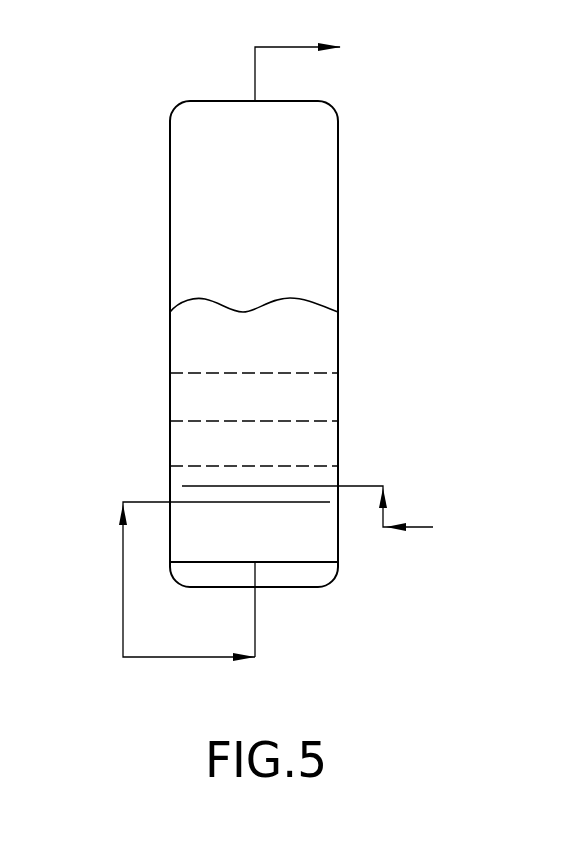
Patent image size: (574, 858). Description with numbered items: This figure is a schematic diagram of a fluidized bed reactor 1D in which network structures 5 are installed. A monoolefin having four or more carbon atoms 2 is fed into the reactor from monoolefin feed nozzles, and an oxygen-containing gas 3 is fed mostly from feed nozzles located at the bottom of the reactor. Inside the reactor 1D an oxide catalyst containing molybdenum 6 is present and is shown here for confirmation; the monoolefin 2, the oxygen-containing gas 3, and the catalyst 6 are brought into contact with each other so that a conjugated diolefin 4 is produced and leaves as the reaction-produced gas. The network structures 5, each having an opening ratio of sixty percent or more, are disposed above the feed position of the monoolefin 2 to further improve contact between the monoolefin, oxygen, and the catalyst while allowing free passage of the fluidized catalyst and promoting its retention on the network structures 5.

The fluidized bed reactor 1D is at (273, 173).
The monoolefin having four or more carbon atoms 2 is at (318, 513).
The oxygen-containing gas 3 is at (123, 657).
The conjugated diolefin 4 is at (309, 67).
The network structure 5 is at (338, 466).
The oxide catalyst containing molybdenum 6 is at (282, 340).